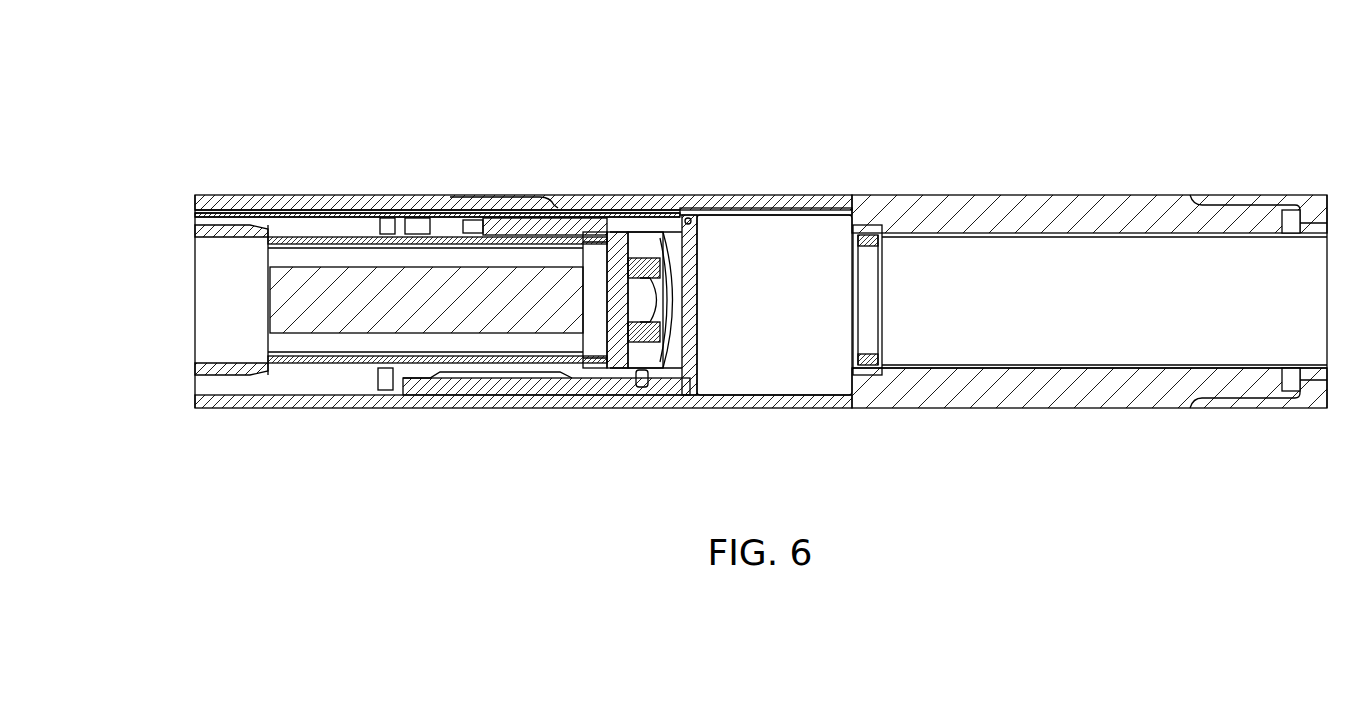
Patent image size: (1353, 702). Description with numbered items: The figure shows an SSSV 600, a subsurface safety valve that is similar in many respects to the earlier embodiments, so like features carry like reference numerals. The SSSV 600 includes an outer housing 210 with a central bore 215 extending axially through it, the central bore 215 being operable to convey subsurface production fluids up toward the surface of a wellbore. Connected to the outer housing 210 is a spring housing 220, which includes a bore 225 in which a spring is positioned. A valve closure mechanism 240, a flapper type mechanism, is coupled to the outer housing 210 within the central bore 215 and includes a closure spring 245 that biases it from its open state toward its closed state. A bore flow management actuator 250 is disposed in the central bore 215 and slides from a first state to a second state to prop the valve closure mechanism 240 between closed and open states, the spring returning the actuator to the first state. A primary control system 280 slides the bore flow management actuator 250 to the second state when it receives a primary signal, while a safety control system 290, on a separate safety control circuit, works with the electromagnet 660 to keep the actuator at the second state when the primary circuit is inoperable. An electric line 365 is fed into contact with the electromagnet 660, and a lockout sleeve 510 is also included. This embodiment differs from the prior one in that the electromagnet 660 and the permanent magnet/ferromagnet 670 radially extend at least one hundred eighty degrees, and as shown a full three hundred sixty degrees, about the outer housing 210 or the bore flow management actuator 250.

The SSSV 600 is at (176, 82).
The safety control system 290 is at (182, 207).
The primary control system 280 is at (182, 388).
The spring housing 220 is at (272, 195).
The bore 225 is at (282, 385).
The bore flow management actuator 250 is at (432, 232).
The permanent magnet/ferromagnet 670 is at (585, 300).
The closure spring 245 is at (690, 212).
The electric line 365 is at (805, 210).
The electromagnet 660 is at (882, 297).
The outer housing 210 is at (1125, 195).
The central bore 215 is at (1086, 311).
The valve closure mechanism 240 is at (684, 382).
The lockout sleeve 510 is at (980, 370).